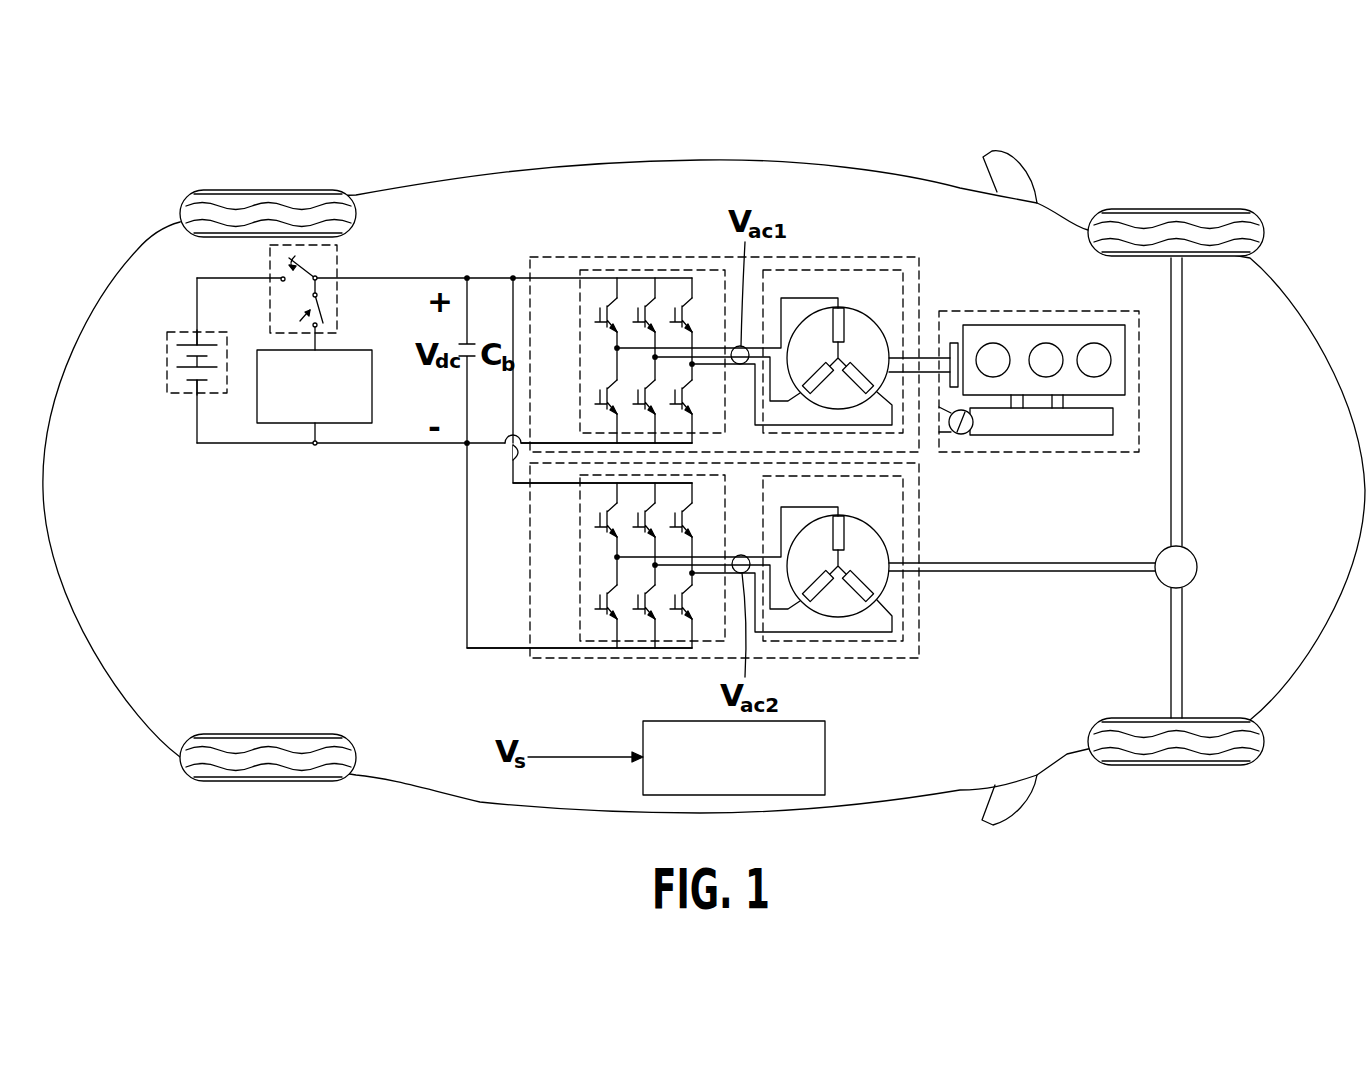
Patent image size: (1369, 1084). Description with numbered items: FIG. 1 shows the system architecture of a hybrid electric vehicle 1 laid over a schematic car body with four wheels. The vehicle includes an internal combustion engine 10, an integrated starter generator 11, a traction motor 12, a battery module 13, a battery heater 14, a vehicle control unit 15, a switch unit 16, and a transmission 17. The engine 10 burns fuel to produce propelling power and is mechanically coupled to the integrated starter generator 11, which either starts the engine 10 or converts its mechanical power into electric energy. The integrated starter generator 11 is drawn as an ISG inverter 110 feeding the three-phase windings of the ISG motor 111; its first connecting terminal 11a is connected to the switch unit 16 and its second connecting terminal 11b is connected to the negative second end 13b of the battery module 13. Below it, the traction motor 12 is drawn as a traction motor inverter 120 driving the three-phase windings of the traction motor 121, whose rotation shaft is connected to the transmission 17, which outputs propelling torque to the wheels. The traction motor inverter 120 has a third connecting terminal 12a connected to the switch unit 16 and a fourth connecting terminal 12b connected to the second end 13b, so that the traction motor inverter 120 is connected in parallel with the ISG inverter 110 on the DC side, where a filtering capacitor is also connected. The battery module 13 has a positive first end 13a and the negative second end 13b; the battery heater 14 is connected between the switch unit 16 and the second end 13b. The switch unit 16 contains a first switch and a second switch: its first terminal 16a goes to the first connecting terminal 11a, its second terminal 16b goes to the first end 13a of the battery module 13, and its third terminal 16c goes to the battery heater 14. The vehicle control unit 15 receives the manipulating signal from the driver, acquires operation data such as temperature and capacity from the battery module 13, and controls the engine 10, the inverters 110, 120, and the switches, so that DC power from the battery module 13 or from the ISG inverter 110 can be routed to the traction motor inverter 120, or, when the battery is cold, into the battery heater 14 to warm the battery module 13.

The hybrid electric vehicle 1 is at (1312, 182).
The internal combustion engine 10 is at (1038, 311).
The integrated starter generator 11 is at (736, 326).
The first connecting terminal 11a is at (530, 278).
The second connecting terminal 11b is at (530, 443).
The ISG inverter 110 is at (580, 352).
The ISG motor 111 is at (903, 300).
The traction motor 12 is at (718, 560).
The third connecting terminal 12a is at (528, 483).
The fourth connecting terminal 12b is at (530, 648).
The traction motor inverter 120 is at (580, 560).
The traction motor 121 is at (903, 507).
The battery module 13 is at (168, 365).
The first end 13a is at (197, 330).
The second end 13b is at (197, 395).
The battery heater 14 is at (384, 372).
The vehicle control unit 15 is at (825, 765).
The switch unit 16 is at (303, 294).
The first terminal 16a is at (335, 277).
The second terminal 16b is at (272, 276).
The third terminal 16c is at (317, 327).
The transmission 17 is at (1191, 552).